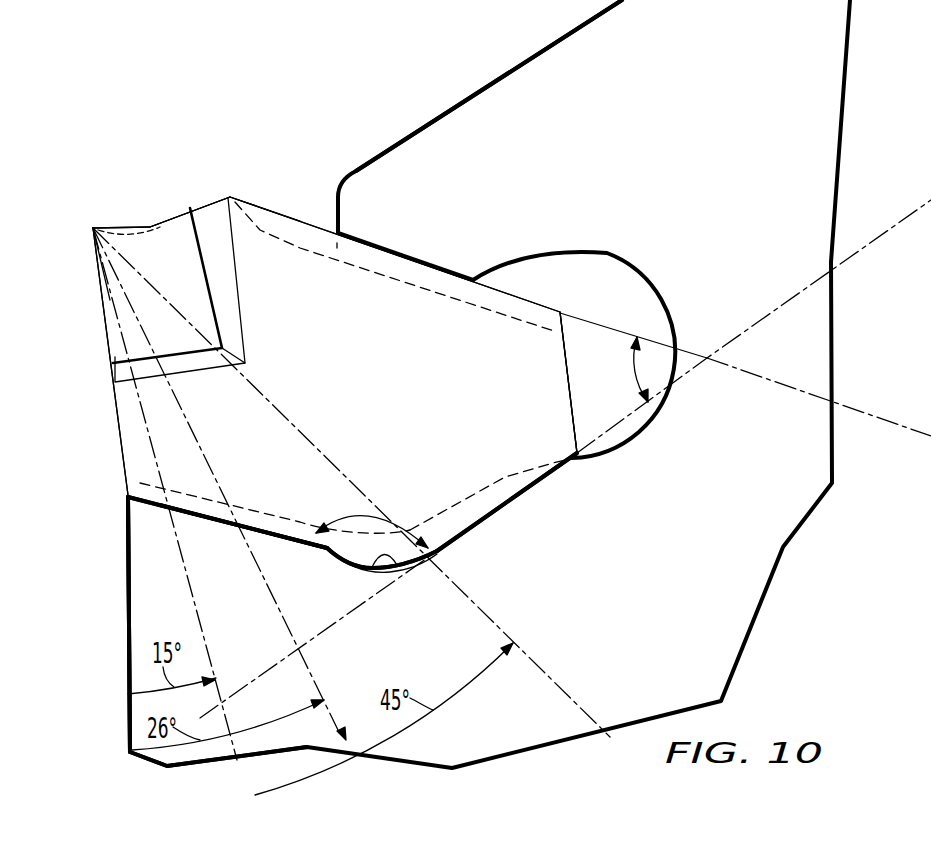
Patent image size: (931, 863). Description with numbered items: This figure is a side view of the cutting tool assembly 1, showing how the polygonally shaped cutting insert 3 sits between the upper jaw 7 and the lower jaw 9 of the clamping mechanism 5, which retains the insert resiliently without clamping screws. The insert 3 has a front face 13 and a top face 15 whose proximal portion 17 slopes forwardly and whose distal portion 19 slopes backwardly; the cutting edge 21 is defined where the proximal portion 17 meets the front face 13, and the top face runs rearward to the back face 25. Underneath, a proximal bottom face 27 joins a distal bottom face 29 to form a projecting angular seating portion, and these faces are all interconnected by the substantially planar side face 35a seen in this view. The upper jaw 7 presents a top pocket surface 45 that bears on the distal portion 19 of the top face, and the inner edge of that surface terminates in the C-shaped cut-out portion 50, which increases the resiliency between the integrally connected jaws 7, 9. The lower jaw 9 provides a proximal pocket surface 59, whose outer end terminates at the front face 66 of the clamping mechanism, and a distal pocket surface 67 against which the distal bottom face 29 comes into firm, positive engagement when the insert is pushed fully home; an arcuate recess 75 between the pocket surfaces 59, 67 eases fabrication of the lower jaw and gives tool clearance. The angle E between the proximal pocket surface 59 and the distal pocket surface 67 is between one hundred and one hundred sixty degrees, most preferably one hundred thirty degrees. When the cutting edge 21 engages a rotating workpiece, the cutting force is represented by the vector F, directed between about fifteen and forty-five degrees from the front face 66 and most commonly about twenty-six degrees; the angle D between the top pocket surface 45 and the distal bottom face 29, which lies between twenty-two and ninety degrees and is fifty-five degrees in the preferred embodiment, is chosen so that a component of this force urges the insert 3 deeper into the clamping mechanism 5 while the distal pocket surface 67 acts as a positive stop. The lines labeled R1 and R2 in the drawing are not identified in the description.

The cutting tool assembly 1 is at (150, 70).
The cutting insert 3 is at (105, 163).
The clamping mechanism 5 is at (322, 112).
The upper jaw 7 is at (454, 197).
The lower jaw 9 is at (247, 634).
The front face 13 is at (120, 430).
The top face 15 is at (231, 176).
The proximal portion 17 is at (158, 212).
The distal portion 19 is at (399, 239).
The cutting edge 21 is at (93, 227).
The back face 25 is at (572, 380).
The proximal bottom face 27 is at (209, 530).
The distal bottom face 29 is at (491, 533).
The side face 35a is at (415, 418).
The top pocket surface 45 is at (409, 276).
The C-shaped cut-out portion 50 is at (682, 297).
The proximal pocket surface 59 is at (286, 518).
The front face 66 is at (128, 612).
The distal pocket surface 67 is at (505, 488).
The arcuate recess 75 is at (397, 570).
The first reference line R1 is at (272, 402).
The second reference line R2 is at (150, 435).
The force vector F is at (196, 440).
The angle E is at (344, 514).
The angle D is at (637, 375).